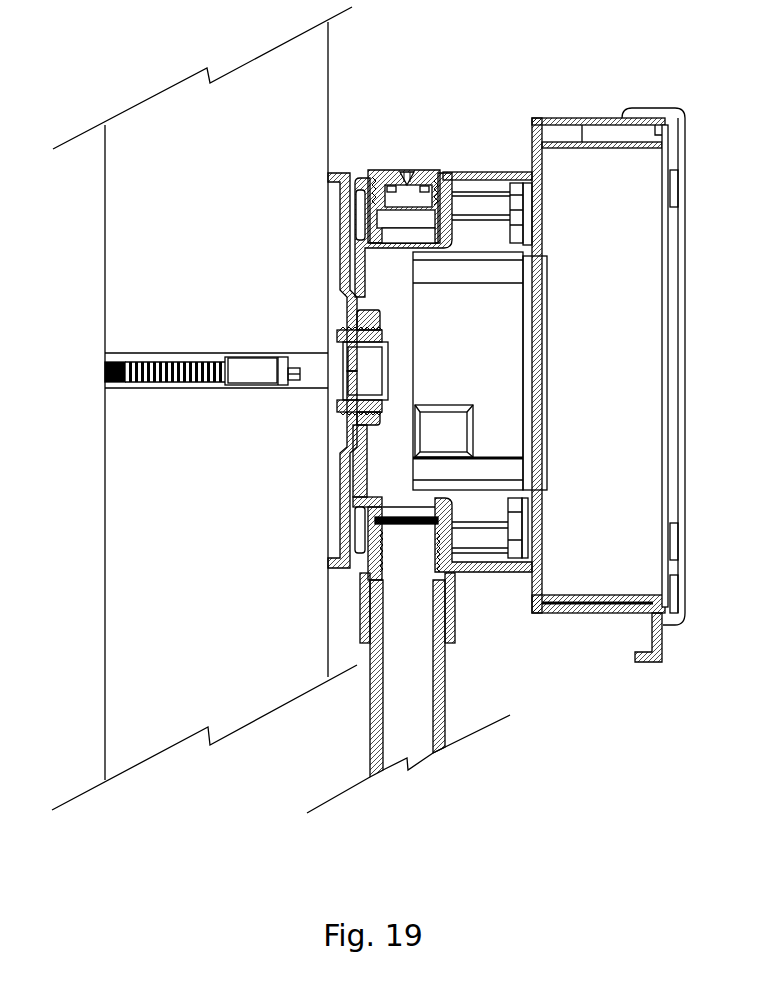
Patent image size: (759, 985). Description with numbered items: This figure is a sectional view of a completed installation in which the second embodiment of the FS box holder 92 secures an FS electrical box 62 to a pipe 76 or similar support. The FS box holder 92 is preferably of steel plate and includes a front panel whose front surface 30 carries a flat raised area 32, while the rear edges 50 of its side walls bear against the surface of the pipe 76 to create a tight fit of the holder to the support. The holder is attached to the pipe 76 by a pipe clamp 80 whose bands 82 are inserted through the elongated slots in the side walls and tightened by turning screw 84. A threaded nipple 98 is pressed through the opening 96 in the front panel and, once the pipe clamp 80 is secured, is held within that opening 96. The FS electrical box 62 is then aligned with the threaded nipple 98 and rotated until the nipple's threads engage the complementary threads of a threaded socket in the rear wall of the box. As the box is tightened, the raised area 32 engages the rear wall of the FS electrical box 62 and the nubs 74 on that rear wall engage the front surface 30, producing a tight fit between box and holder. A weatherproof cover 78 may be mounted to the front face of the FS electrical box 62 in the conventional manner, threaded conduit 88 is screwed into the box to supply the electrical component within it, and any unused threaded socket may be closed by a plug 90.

The front surface 30 is at (353, 468).
The raised area 32 is at (357, 297).
The rear edges 50 is at (333, 490).
The FS electrical box 62 is at (483, 172).
The nubs 74 is at (353, 520).
The pipe 76 is at (203, 181).
The weatherproof cover 78 is at (597, 118).
The pipe clamp 80 is at (253, 387).
The bands 82 is at (313, 362).
The screw 84 is at (293, 385).
The threaded conduit 88 is at (445, 678).
The plug 90 is at (424, 170).
The FS box holder 92 is at (330, 176).
The opening 96 is at (348, 418).
The threaded nipple 98 is at (387, 370).